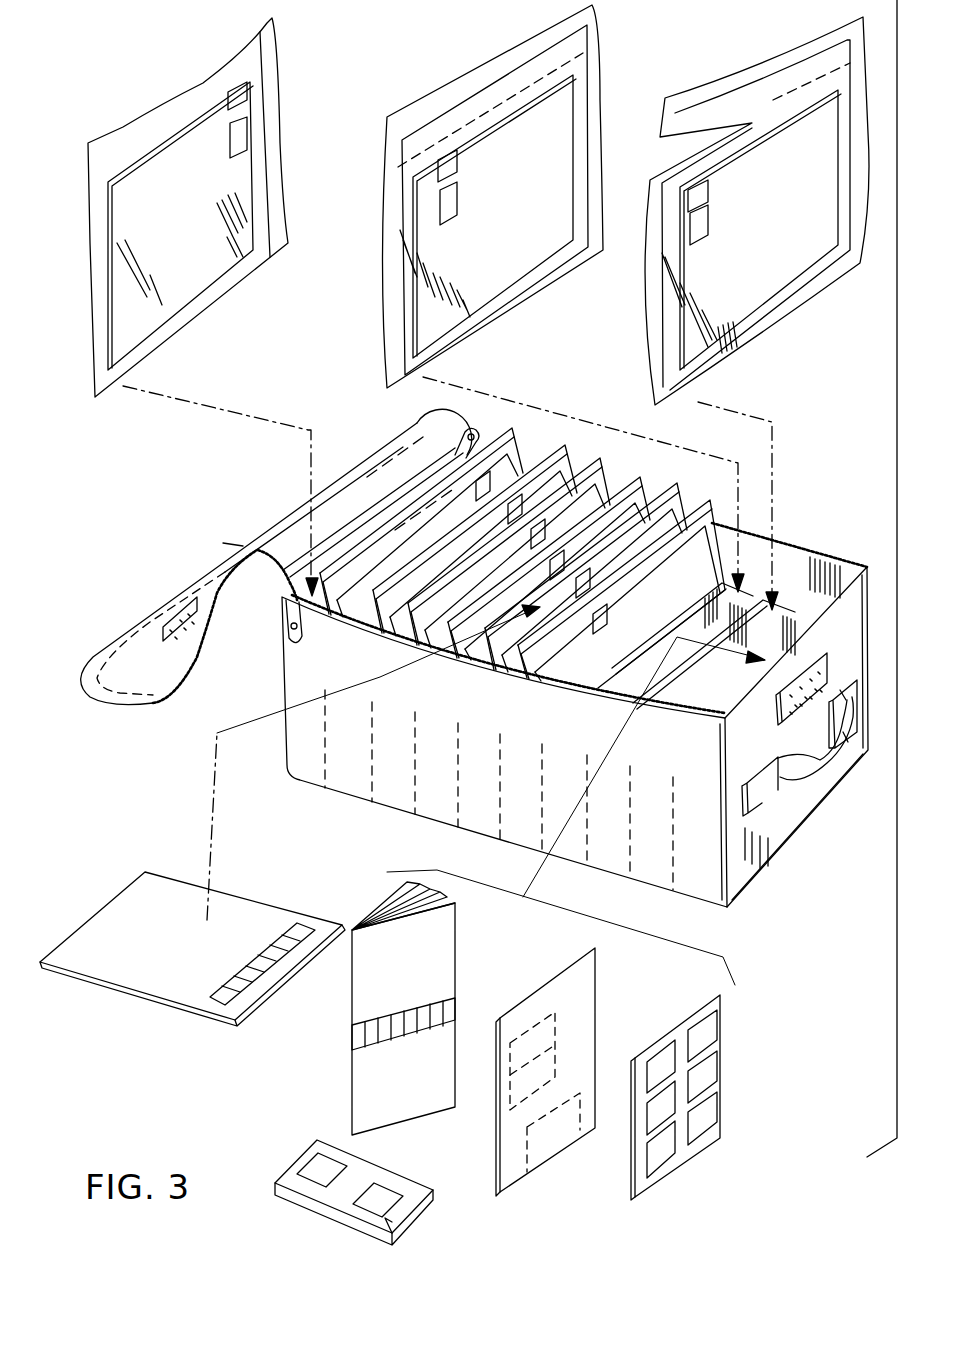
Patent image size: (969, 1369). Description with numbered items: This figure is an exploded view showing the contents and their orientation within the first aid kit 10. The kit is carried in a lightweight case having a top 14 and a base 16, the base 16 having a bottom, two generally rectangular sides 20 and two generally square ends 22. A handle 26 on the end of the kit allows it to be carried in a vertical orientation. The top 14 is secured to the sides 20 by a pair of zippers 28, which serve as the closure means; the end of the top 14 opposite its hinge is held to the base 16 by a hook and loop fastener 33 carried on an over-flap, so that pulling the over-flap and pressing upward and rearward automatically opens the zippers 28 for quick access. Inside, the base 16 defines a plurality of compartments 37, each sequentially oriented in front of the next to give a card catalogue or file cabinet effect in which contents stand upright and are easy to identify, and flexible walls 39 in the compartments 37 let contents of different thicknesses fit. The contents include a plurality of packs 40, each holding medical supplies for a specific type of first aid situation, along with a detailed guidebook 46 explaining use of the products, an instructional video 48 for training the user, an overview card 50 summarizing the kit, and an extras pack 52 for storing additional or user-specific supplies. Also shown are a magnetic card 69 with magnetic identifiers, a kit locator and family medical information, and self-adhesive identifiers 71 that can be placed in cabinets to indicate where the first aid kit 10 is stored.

The first aid kit 10 is at (866, 519).
The top 14 is at (128, 705).
The base 16 is at (700, 850).
The sides 20 is at (303, 757).
The ends 22 is at (857, 646).
The handle 26 is at (830, 765).
The zippers 28 is at (470, 430).
The hook and loop fastener 33 is at (182, 612).
The compartments 37 is at (752, 598).
The flexible walls 39 is at (625, 690).
The packs 40 is at (580, 243).
The guidebook 46 is at (365, 1077).
The instructional video 48 is at (420, 1210).
The overview card 50 is at (160, 985).
The extras pack 52 is at (98, 398).
The magnetic card 69 is at (590, 988).
The self-adhesive identifiers 71 is at (718, 1048).